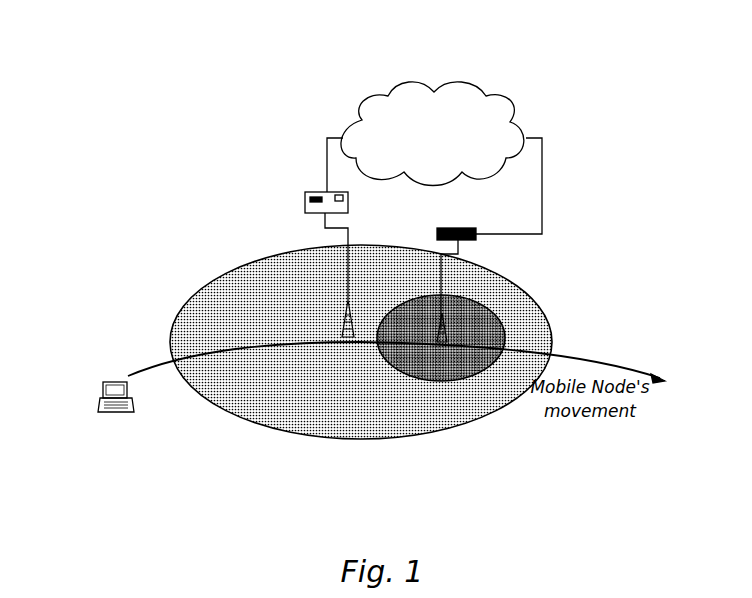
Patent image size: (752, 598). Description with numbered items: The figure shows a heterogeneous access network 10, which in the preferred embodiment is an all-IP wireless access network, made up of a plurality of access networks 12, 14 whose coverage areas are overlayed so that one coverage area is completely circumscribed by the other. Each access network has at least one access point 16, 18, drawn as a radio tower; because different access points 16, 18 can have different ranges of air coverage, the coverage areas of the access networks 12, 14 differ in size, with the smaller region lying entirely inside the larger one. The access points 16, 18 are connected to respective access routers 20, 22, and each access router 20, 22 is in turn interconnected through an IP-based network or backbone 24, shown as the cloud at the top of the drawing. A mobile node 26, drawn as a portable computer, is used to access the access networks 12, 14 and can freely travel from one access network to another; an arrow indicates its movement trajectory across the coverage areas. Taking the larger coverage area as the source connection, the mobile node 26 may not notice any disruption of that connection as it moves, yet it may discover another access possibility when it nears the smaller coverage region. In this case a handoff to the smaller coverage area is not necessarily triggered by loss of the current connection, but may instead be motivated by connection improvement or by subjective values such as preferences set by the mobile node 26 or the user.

The heterogeneous access network 10 is at (428, 72).
The access network 12 is at (547, 326).
The access network 14 is at (412, 298).
The access point 16 is at (344, 316).
The access point 18 is at (447, 326).
The access router 20 is at (322, 192).
The access router 22 is at (460, 228).
The IP-based network or backbone 24 is at (478, 94).
The mobile node 26 is at (104, 380).